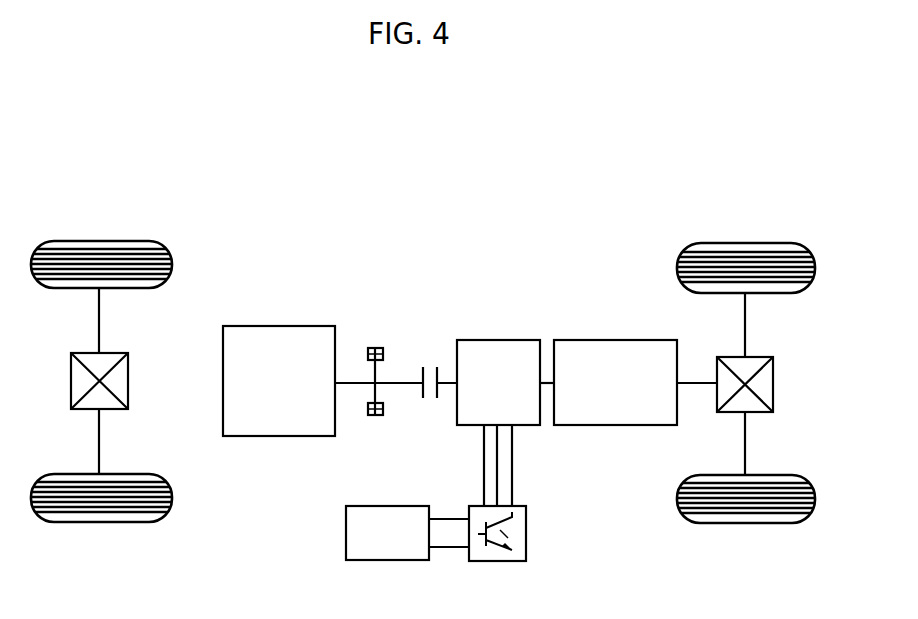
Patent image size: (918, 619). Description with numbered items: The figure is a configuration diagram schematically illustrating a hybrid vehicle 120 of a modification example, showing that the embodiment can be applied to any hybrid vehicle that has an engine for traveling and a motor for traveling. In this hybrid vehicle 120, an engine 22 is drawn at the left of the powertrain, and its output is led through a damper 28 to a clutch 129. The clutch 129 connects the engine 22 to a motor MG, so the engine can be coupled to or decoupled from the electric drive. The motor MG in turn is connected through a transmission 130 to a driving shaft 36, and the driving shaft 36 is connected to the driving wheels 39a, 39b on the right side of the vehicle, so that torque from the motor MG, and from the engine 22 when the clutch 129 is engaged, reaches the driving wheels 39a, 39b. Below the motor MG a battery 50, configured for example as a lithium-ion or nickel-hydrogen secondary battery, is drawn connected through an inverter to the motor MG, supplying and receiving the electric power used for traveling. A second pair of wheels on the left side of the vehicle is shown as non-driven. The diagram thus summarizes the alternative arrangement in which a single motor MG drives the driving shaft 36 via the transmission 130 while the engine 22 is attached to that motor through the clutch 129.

The engine 22 is at (280, 322).
The damper 28 is at (376, 346).
The clutch 129 is at (430, 365).
The motor MG is at (498, 338).
The transmission 130 is at (620, 338).
The hybrid vehicle 120 is at (615, 232).
The driving shaft 36 is at (695, 380).
The driving wheel 39a is at (746, 242).
The driving wheel 39b is at (745, 524).
The battery 50 is at (388, 504).